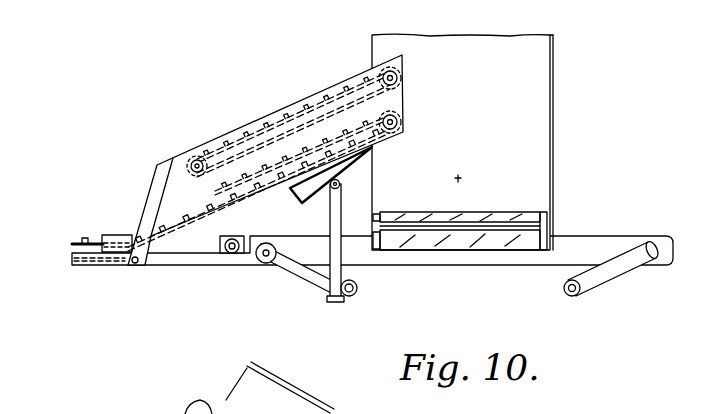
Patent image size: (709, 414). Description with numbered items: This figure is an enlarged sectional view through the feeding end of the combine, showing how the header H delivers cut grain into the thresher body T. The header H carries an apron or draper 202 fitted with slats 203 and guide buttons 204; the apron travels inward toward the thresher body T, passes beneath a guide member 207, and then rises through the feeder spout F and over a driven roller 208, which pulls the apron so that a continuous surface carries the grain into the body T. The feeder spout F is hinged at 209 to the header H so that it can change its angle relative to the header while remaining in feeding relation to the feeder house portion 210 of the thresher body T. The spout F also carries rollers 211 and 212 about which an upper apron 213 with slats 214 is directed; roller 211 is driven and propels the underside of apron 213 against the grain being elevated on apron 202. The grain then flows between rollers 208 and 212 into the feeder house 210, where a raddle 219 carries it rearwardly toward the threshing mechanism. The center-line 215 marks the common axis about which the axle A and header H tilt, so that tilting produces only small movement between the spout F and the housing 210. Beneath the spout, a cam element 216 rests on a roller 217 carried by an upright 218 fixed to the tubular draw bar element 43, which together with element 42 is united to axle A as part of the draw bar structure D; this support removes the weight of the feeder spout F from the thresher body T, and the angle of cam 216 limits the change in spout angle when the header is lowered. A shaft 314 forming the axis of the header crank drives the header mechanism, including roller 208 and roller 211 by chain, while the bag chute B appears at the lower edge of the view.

The apron 202 is at (92, 241).
The guide member 207 is at (112, 236).
The slats 203 is at (182, 214).
The guide buttons 204 is at (226, 189).
The roller 208 is at (404, 120).
The hinge 209 is at (137, 268).
The feeder house portion 210 is at (556, 157).
The roller 211 is at (196, 156).
The roller 212 is at (368, 54).
The apron 213 is at (245, 137).
The slats 214 is at (268, 114).
The center-line 215 is at (462, 182).
The cam element 216 is at (299, 200).
The roller 217 is at (341, 184).
The upright 218 is at (341, 210).
The raddle 219 is at (466, 212).
The shaft 314 is at (233, 255).
The tubular draw bar element 42 is at (565, 294).
The tubular draw bar element 43 is at (351, 297).
The axle structure A is at (568, 246).
The bag chute B is at (246, 366).
The draw bar structure D is at (594, 284).
The feeder spout F is at (282, 102).
The header H is at (70, 243).
The thresher body T is at (565, 105).